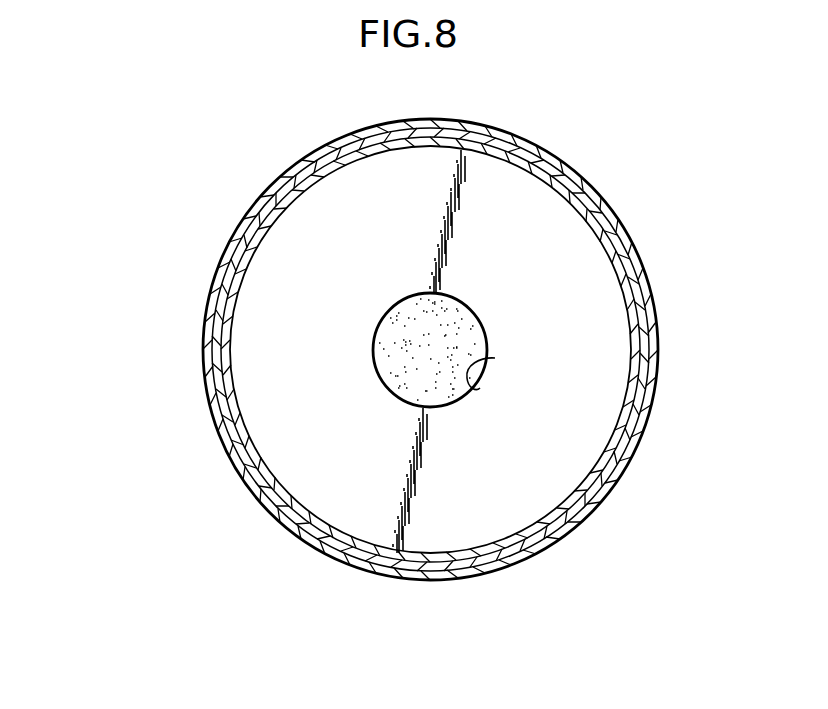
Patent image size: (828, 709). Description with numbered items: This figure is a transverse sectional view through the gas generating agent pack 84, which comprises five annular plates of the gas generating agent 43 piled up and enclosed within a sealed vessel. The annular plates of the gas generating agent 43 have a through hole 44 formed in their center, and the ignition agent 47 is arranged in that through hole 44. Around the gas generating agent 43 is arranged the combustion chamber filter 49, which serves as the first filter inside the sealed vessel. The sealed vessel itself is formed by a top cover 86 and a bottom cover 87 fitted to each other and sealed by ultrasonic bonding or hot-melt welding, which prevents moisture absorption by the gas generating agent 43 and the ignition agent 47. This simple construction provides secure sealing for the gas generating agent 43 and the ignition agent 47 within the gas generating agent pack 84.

The gas generating agent pack 84 is at (608, 193).
The bottom cover 87 is at (225, 448).
The top cover 86 is at (258, 491).
The combustion chamber filter 49 is at (278, 513).
The gas generating agent 43 is at (570, 425).
The ignition agent 47 is at (452, 328).
The through hole 44 is at (495, 358).